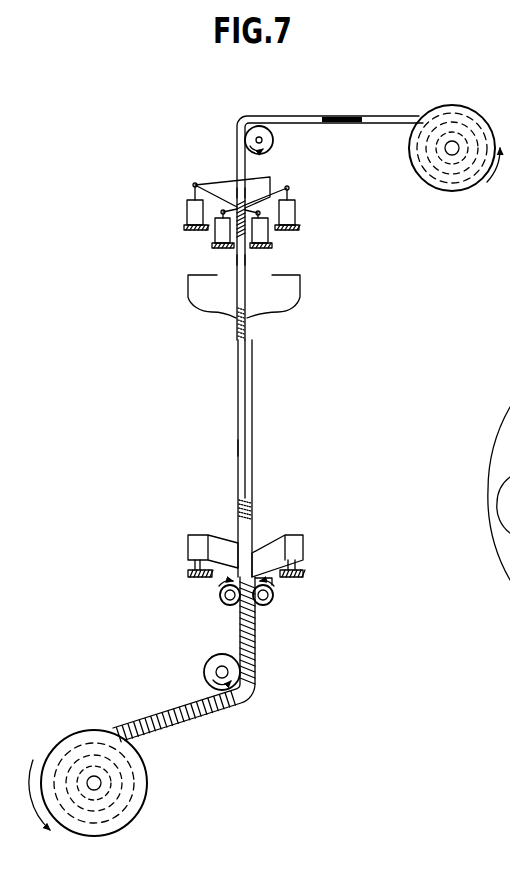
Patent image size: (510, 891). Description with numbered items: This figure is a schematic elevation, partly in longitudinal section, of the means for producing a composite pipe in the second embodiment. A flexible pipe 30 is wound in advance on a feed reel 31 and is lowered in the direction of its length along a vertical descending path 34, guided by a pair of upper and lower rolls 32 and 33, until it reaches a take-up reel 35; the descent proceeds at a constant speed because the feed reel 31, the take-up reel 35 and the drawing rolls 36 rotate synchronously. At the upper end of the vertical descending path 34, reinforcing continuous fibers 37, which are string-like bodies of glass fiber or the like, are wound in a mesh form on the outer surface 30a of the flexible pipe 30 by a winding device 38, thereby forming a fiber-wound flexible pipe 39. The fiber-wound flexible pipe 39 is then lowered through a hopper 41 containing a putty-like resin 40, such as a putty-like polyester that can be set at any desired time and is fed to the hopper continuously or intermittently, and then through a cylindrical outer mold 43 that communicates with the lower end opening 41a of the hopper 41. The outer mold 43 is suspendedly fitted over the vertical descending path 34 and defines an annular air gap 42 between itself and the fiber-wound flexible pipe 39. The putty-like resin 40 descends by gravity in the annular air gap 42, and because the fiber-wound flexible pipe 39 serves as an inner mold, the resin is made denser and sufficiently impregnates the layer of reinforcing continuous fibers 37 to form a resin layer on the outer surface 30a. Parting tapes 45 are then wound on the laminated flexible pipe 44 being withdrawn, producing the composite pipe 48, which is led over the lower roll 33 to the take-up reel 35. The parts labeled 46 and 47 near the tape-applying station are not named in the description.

The flexible pipe 30 is at (340, 106).
The outer surface of the flexible pipe 30a is at (237, 193).
The feed reel 31 is at (453, 185).
The upper roll 32 is at (273, 140).
The lower roll 33 is at (206, 666).
The vertical descending path 34 is at (247, 386).
The take-up reel 35 is at (148, 796).
The drawing rolls 36 is at (268, 604).
The reinforcing continuous fibers 37 is at (270, 178).
The fiber winding device 38 is at (181, 222).
The fiber-wound flexible pipe 39 is at (234, 260).
The putty-like resin 40 is at (212, 297).
The hopper 41 is at (302, 290).
The lower end opening of the hopper 41a is at (257, 307).
The annular air gap 42 is at (250, 420).
The cylindrical outer mold 43 is at (236, 448).
The laminated flexible pipe 44 is at (256, 516).
The parting tapes 45 is at (200, 550).
The block support 46 is at (273, 578).
The block base 47 is at (304, 573).
The composite pipe 48 is at (227, 709).